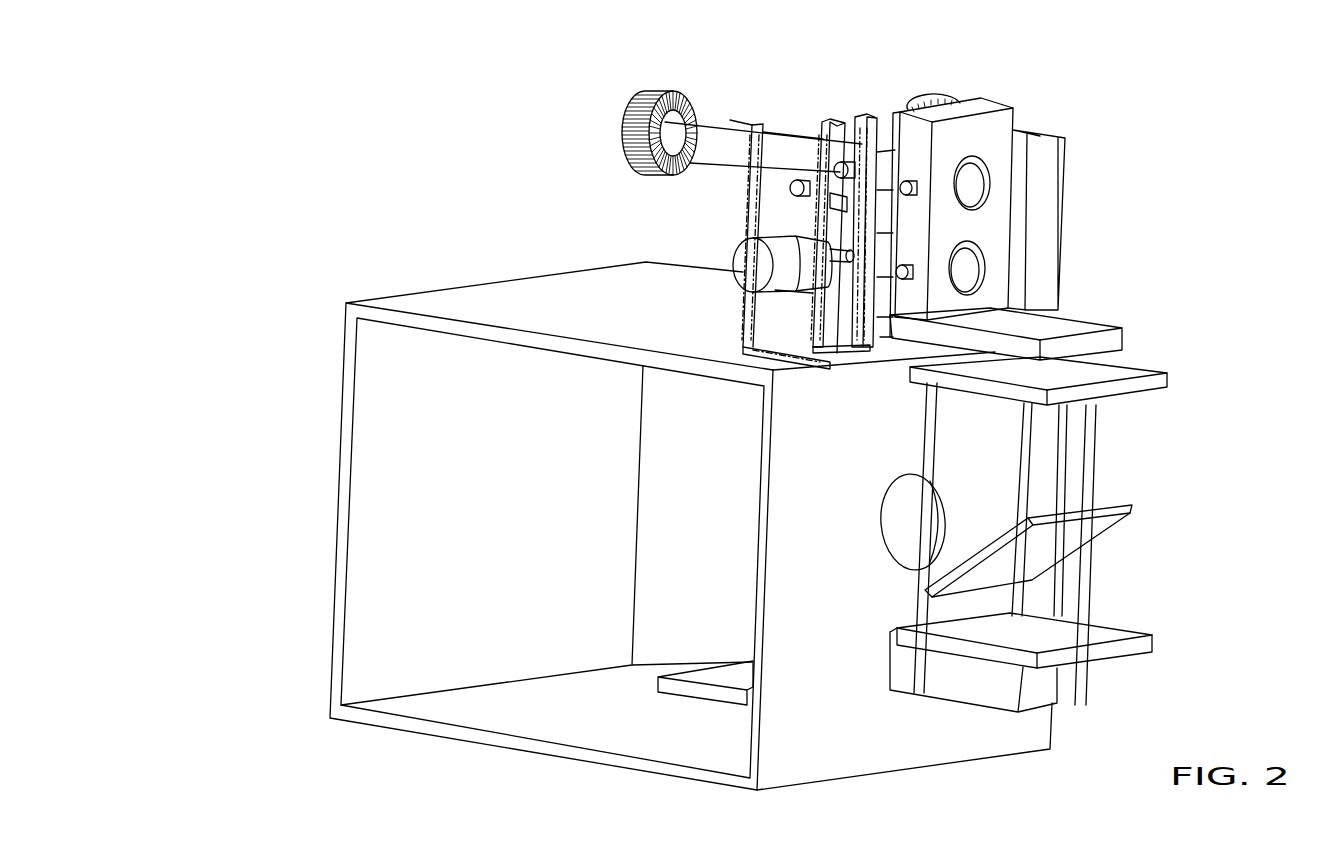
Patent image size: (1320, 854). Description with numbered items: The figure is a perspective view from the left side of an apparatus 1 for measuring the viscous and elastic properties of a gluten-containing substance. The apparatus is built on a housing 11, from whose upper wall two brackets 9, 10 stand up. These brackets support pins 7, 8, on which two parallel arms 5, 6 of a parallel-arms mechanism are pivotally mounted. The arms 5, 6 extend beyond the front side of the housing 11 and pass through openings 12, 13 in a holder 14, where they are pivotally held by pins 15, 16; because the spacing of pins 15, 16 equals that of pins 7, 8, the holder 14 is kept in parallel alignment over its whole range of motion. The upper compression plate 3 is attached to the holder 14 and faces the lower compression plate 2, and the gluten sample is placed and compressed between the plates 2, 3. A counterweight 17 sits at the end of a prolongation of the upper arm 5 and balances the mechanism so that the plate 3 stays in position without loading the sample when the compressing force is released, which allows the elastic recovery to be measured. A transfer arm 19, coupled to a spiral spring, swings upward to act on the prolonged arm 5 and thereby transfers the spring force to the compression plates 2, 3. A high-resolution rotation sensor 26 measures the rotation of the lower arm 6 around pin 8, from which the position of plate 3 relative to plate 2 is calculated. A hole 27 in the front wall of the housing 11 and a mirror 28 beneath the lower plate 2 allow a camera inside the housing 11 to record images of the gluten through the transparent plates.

The apparatus 1 is at (500, 203).
The housing 11 is at (515, 310).
The counterweight 17 is at (649, 97).
The parallel arm 5 is at (731, 137).
The pin 8 is at (829, 238).
The bracket 10 is at (838, 128).
The bracket 9 is at (887, 135).
The parallel arm 6 is at (882, 258).
The holder 14 is at (981, 128).
The opening 12 is at (992, 161).
The opening 13 is at (992, 252).
The pin 15 is at (920, 192).
The pin 16 is at (916, 275).
The pin 7 is at (836, 167).
The transfer arm 19 is at (793, 190).
The rotation sensor 26 is at (750, 265).
The upper compression plate 3 is at (1078, 322).
The lower compression plate 2 is at (1160, 376).
The mirror 28 is at (1030, 553).
The hole 27 is at (884, 549).